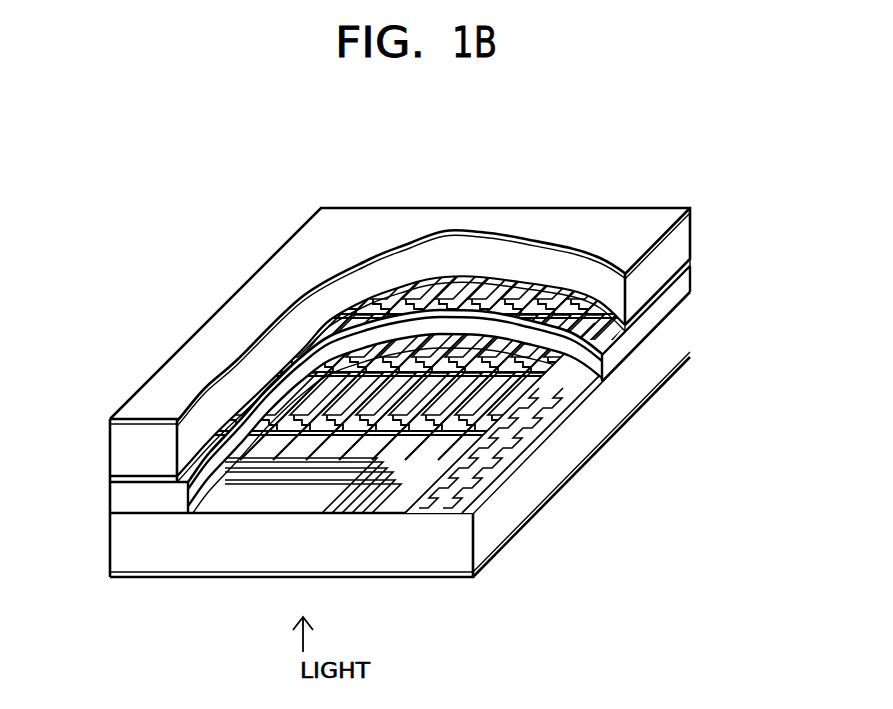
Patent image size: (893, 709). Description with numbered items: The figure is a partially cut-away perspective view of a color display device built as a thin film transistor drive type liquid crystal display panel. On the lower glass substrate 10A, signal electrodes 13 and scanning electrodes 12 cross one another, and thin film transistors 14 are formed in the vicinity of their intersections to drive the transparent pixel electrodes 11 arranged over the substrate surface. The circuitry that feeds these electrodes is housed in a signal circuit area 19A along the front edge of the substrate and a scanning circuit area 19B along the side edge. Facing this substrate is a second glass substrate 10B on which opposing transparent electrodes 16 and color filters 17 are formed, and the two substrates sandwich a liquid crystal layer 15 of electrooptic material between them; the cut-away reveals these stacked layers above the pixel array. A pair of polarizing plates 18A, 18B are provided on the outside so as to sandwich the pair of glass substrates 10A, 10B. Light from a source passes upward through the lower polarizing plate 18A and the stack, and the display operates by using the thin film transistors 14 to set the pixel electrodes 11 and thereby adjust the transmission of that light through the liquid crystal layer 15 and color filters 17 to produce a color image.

The glass substrate 10A is at (440, 568).
The glass substrate 10B is at (682, 237).
The transparent pixel electrodes 11 is at (398, 332).
The scanning electrodes 12 is at (600, 374).
The signal electrodes 13 is at (488, 500).
The thin film transistors 14 is at (300, 410).
The liquid crystal layer 15 is at (682, 285).
The opposing transparent electrodes 16 is at (688, 262).
The color filters 17 is at (487, 287).
The polarizing plate 18A is at (110, 572).
The polarizing plate 18B is at (110, 420).
The signal circuit area 19A is at (265, 505).
The scanning circuit area 19B is at (557, 407).